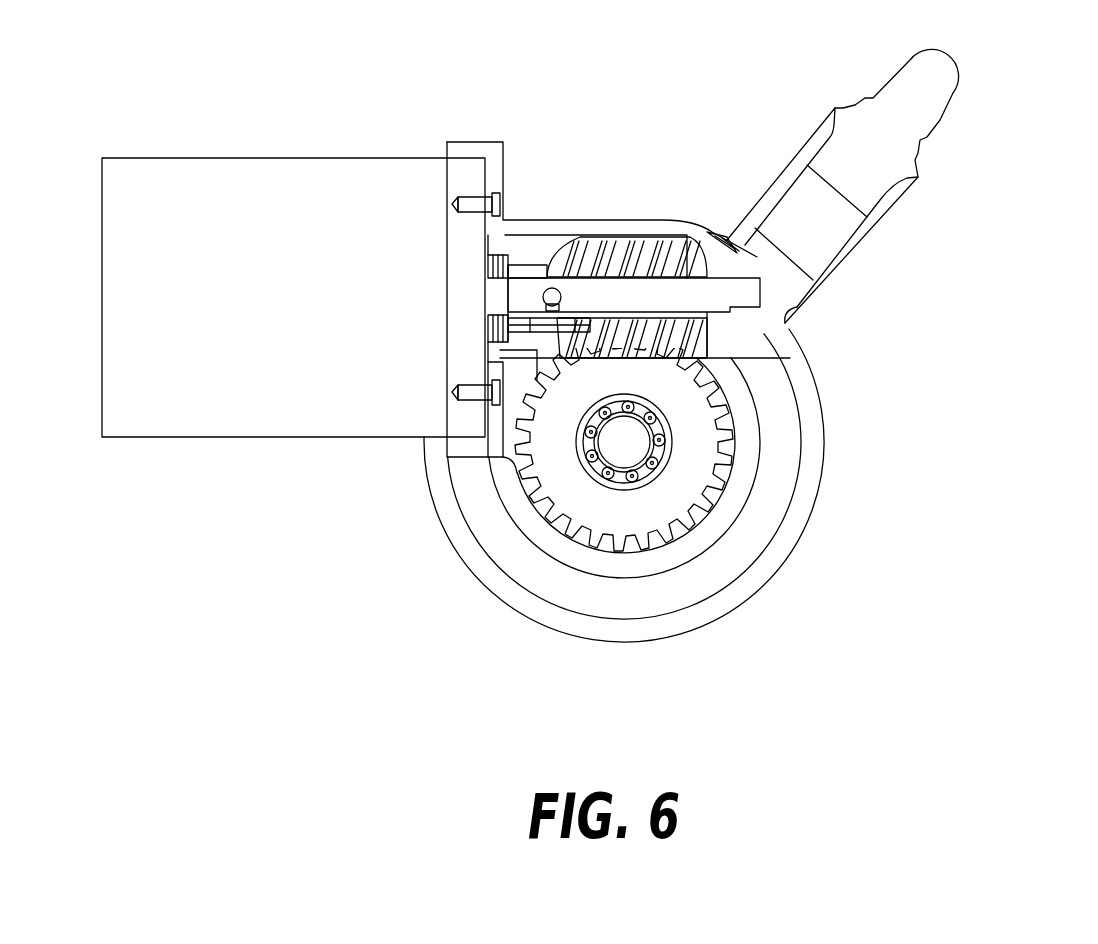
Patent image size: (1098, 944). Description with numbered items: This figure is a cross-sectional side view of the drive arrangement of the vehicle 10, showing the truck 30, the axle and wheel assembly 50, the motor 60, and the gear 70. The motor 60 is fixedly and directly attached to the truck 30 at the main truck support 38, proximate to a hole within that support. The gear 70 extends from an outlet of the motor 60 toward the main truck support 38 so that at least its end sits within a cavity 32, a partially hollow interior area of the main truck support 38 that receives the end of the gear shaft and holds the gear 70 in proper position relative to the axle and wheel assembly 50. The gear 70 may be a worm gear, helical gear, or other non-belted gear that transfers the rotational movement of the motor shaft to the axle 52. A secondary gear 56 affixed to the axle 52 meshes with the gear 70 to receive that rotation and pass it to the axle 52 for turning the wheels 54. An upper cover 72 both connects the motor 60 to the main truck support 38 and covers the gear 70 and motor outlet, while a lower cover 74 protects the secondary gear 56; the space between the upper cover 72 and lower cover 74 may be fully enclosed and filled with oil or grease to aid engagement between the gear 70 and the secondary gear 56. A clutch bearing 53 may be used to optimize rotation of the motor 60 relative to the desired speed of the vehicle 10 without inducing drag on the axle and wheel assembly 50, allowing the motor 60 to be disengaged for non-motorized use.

The vehicle 10 is at (1006, 180).
The truck 30 is at (912, 270).
The cavity 32 is at (745, 291).
The main truck support 38 is at (753, 257).
The axle and wheel assembly 50 is at (513, 647).
The axle 52 is at (617, 437).
The clutch bearing 53 is at (643, 480).
The wheels 54 is at (788, 542).
The secondary gear 56 is at (687, 437).
The motor 60 is at (312, 347).
The gear 70 is at (643, 237).
The upper cover 72 is at (557, 225).
The lower cover 74 is at (547, 540).